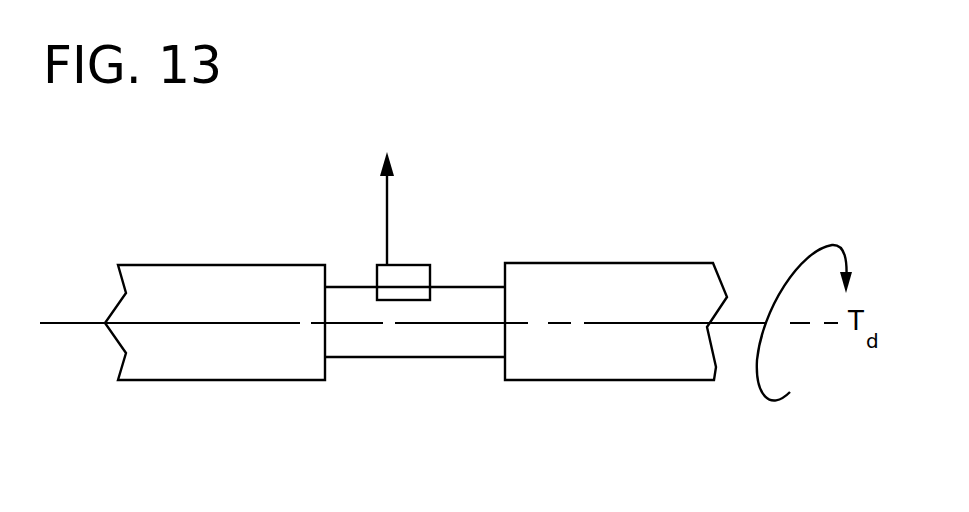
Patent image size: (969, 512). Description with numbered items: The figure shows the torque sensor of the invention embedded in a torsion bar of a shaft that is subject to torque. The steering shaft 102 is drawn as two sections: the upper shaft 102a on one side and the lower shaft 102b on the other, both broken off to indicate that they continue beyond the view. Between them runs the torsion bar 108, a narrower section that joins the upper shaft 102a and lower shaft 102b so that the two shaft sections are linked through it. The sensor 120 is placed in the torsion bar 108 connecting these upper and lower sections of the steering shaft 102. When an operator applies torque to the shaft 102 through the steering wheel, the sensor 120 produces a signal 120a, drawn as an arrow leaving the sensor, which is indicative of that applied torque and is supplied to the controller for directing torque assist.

The shaft 102 is at (240, 429).
The upper shaft 102a is at (560, 263).
The lower shaft 102b is at (220, 265).
The torsion bar 108 is at (412, 357).
The sensor 120 is at (413, 265).
The signal 120a is at (387, 202).